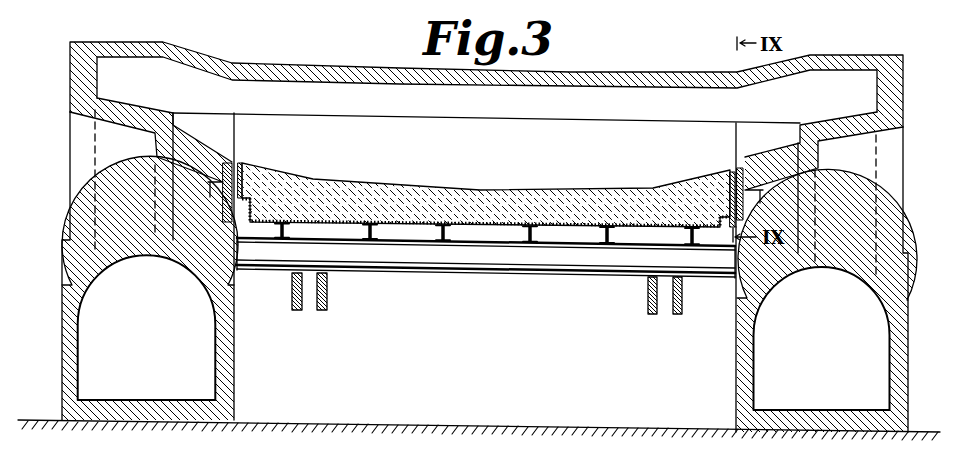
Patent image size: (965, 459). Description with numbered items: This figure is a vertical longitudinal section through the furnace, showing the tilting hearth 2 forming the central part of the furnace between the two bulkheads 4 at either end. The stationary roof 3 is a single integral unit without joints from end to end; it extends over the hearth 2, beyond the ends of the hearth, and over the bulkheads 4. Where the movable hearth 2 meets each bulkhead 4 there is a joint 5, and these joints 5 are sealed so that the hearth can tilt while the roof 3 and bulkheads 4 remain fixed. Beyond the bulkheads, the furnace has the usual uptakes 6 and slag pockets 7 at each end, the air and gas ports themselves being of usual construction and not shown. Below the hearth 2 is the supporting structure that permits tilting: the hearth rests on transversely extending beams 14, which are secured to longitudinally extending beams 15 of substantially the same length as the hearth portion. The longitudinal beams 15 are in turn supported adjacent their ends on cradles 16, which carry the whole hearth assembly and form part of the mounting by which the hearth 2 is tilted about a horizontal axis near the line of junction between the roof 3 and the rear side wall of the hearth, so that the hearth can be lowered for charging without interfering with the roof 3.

The tilting hearth 2 is at (447, 190).
The stationary roof 3 is at (345, 66).
The bulkhead 4 is at (199, 140).
The joint 5 is at (237, 137).
The uptake 6 is at (110, 185).
The slag pocket 7 is at (88, 340).
The transversely extending beam 14 is at (439, 234).
The longitudinally extending beam 15 is at (473, 262).
The cradle 16 is at (327, 294).